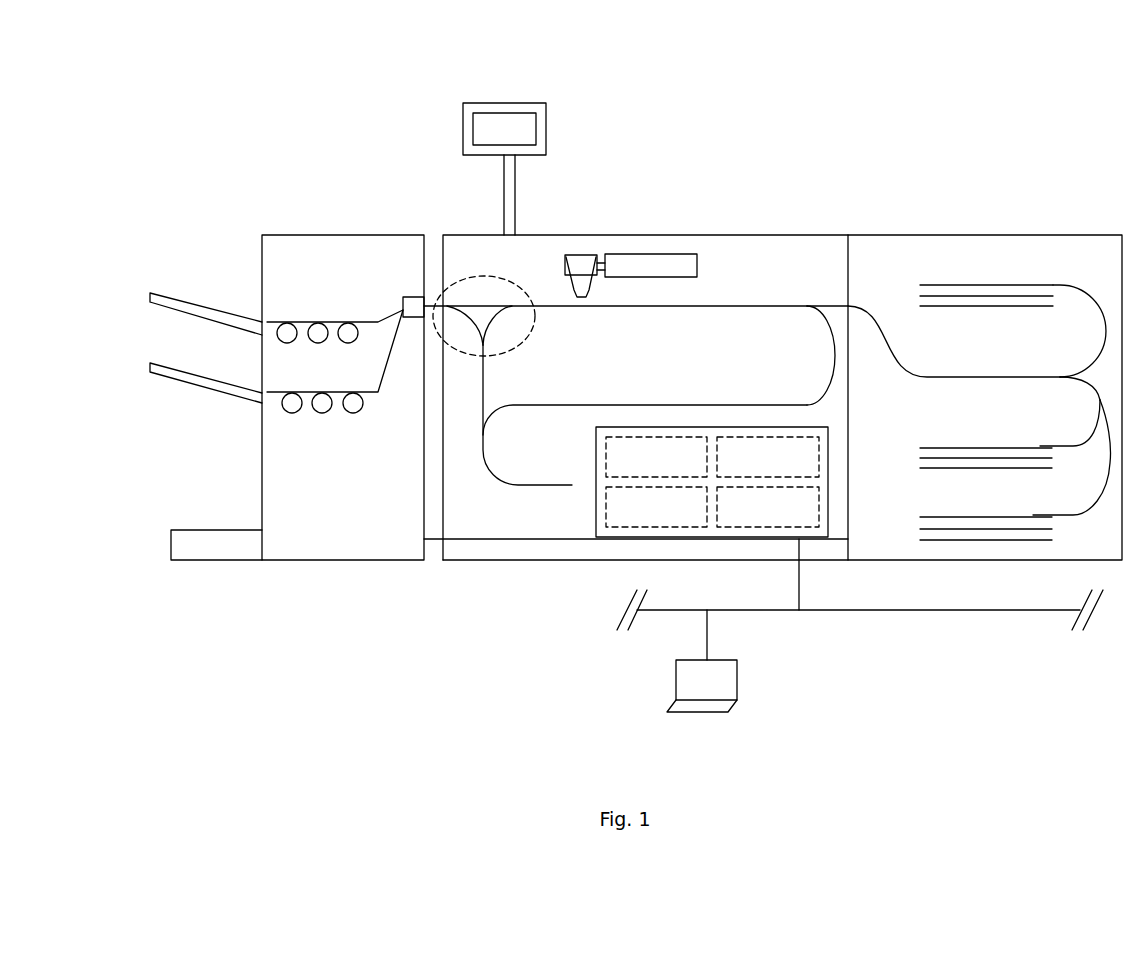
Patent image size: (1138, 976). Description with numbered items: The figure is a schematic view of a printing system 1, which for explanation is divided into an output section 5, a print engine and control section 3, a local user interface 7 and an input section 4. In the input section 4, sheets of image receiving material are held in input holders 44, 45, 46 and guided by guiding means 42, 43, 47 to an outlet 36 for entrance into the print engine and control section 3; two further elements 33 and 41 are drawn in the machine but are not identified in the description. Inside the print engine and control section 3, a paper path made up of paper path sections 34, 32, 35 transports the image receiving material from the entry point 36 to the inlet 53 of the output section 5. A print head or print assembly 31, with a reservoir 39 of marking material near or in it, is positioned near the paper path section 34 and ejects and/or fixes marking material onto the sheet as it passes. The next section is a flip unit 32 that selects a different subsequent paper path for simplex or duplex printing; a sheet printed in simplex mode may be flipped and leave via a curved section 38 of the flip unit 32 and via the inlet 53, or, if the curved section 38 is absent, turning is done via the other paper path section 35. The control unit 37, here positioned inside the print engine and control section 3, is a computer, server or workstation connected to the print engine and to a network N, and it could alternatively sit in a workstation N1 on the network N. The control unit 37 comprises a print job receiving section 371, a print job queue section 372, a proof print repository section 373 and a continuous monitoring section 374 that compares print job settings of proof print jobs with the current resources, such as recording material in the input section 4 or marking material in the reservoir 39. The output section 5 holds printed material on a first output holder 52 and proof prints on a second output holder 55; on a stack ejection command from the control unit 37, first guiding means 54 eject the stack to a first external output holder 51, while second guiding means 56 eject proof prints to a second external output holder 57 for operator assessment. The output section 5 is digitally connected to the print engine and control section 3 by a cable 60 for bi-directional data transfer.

The printing system 1 is at (312, 102).
The print engine and control section 3 is at (470, 247).
The input section 4 is at (898, 245).
The output section 5 is at (317, 247).
The local user interface 7 is at (468, 104).
The print head or print assembly 31 is at (580, 258).
The flip unit 32 is at (517, 348).
The conveyance path 33 is at (650, 308).
The paper path section 34 is at (762, 305).
The paper path section 35 is at (720, 403).
The entry point 36 is at (845, 305).
The control unit 37 is at (597, 508).
The curved section 38 is at (475, 355).
The reservoir 39 is at (615, 253).
The conveyance path 41 is at (930, 283).
The guiding means 42 is at (1107, 330).
The guiding means 43 is at (1100, 400).
The input holder 44 is at (920, 448).
The input holder 45 is at (926, 527).
The input holder 46 is at (917, 290).
The guiding means 47 is at (1110, 463).
The first external output holder 51 is at (184, 302).
The first output holder 52 is at (369, 320).
The inlet 53 is at (409, 297).
The first guiding means 54 is at (293, 323).
The second output holder 55 is at (368, 392).
The second guiding means 56 is at (296, 395).
The second external output holder 57 is at (173, 378).
The cable 60 is at (428, 541).
The print job receiving section 371 is at (662, 447).
The print job queue section 372 is at (772, 447).
The proof print repository section 373 is at (658, 516).
The continuous monitoring section 374 is at (750, 516).
The network N is at (935, 612).
The workstation N1 is at (737, 688).